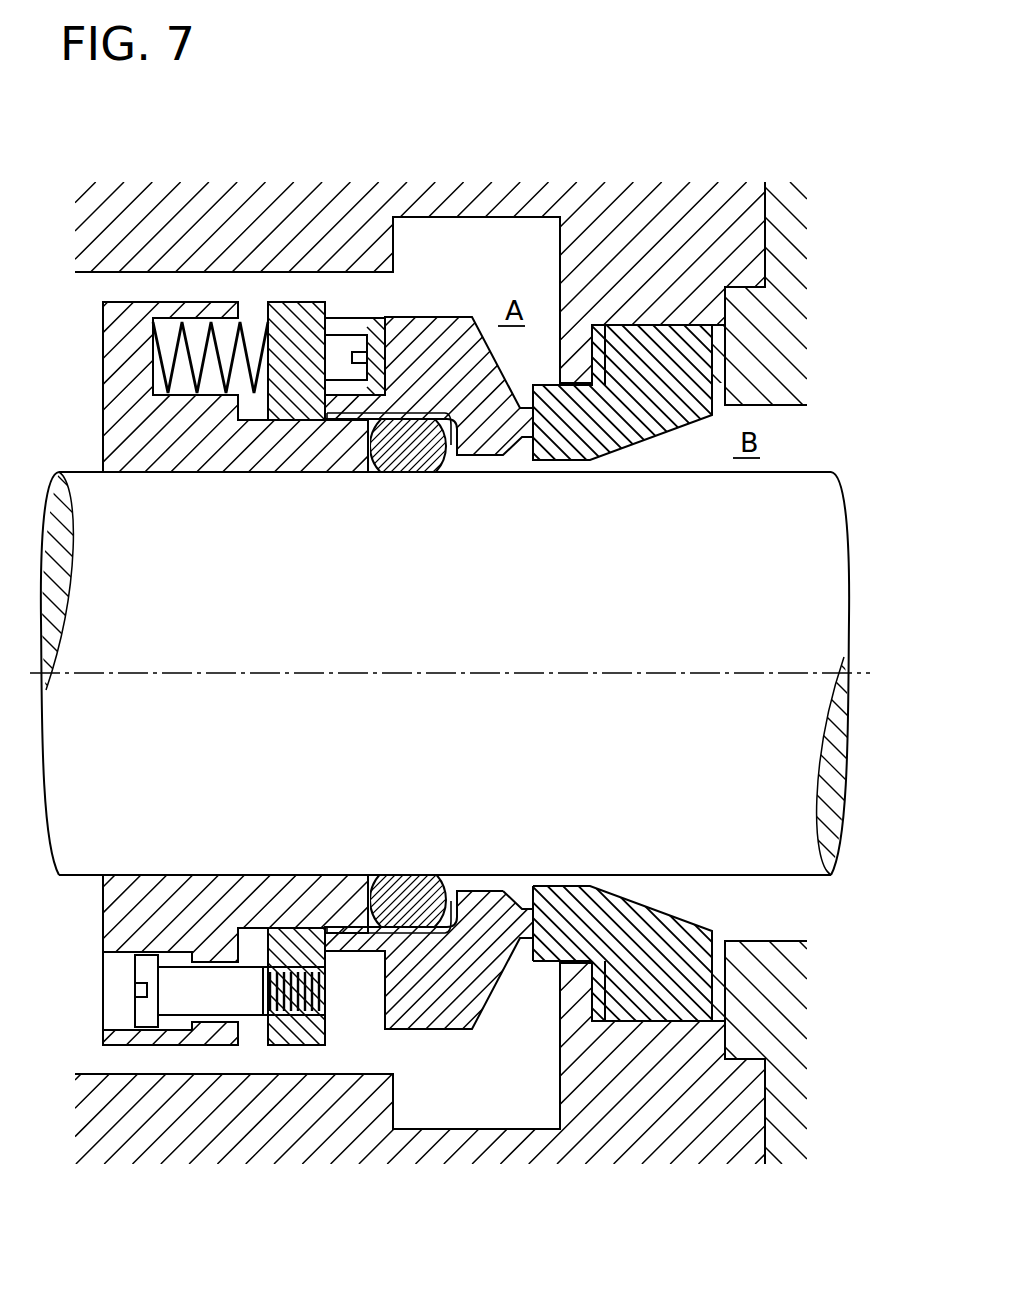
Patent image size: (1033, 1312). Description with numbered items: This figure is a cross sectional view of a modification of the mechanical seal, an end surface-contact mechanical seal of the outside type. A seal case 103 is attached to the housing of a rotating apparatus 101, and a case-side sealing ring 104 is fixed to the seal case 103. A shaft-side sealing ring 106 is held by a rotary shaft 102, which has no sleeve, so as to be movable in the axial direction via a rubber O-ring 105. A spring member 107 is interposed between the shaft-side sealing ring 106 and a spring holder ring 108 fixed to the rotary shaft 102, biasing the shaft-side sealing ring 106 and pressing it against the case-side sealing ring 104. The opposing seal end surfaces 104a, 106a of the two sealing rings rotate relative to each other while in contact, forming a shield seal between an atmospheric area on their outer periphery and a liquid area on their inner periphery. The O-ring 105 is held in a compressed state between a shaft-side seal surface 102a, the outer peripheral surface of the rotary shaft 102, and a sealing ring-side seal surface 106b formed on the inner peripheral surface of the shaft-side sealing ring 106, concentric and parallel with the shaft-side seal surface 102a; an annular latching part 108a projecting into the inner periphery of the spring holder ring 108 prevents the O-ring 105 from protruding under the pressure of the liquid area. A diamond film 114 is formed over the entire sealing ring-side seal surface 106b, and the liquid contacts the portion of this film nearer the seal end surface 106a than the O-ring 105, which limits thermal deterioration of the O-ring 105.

The housing of a rotating apparatus 101 is at (782, 202).
The rotary shaft 102 is at (75, 462).
The shaft-side seal surface 102a is at (422, 893).
The seal case 103 is at (328, 223).
The case-side sealing ring 104 is at (648, 422).
The seal end surface 104a is at (502, 897).
The O-ring 105 is at (405, 457).
The shaft-side sealing ring 106 is at (487, 437).
The seal end surface 106a is at (557, 933).
The sealing ring-side seal surface 106b is at (413, 930).
The spring member 107 is at (262, 333).
The spring holder ring 108 is at (180, 447).
The annular latching part 108a is at (362, 900).
The diamond film 114 is at (428, 470).